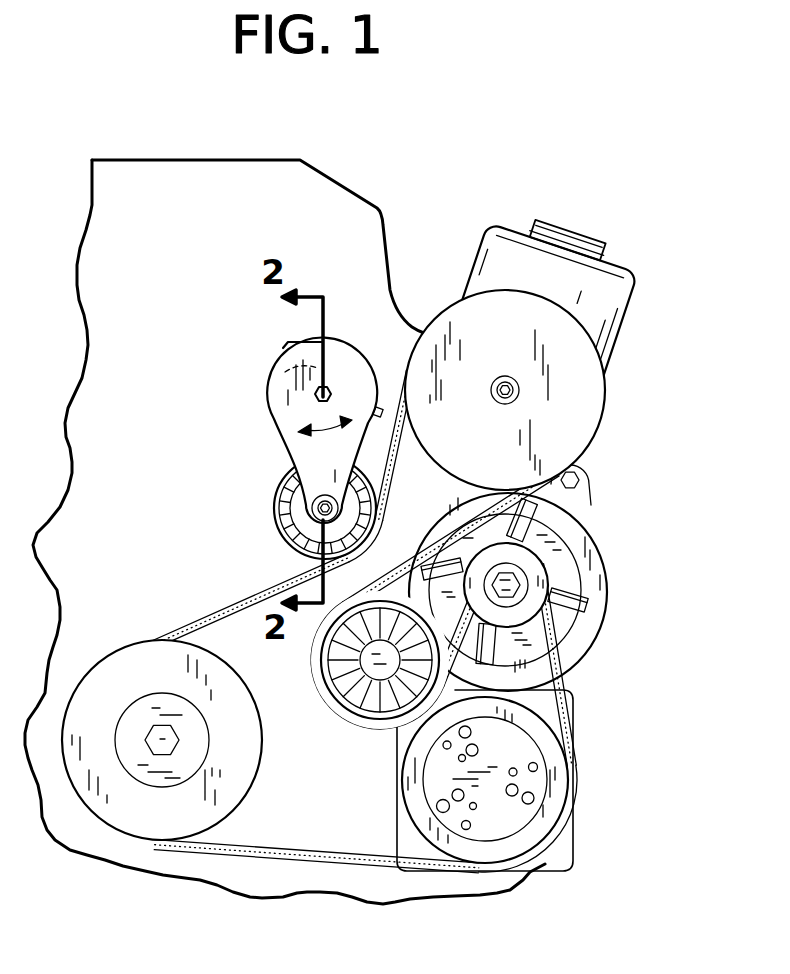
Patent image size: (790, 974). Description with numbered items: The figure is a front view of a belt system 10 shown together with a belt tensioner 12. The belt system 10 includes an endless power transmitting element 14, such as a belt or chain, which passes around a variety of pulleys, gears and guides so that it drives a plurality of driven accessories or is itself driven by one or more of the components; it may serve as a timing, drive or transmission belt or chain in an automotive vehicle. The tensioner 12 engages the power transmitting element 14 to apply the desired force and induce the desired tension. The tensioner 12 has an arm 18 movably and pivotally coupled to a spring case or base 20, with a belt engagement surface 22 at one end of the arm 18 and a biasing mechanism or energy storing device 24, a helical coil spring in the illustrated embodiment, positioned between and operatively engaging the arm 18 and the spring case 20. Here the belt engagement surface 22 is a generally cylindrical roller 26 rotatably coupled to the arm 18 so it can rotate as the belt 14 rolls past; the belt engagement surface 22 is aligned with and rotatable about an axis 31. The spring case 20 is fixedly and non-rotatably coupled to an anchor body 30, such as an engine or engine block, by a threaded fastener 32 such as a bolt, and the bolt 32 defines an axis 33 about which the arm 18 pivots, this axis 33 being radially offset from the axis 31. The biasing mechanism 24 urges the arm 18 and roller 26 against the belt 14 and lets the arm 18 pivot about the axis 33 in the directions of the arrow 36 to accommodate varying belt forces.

The belt system 10 is at (526, 448).
The belt tensioner 12 is at (318, 433).
The endless power transmitting element 14 is at (363, 621).
The arm 18 is at (296, 509).
The spring case 20 is at (288, 348).
The belt engagement surface 22 is at (386, 497).
The biasing mechanism 24 is at (290, 380).
The roller 26 is at (275, 528).
The anchor body 30 is at (370, 236).
The axis 31 is at (322, 497).
The threaded fastener 32 is at (330, 388).
The axis 33 is at (316, 398).
The arrow 36 is at (330, 422).